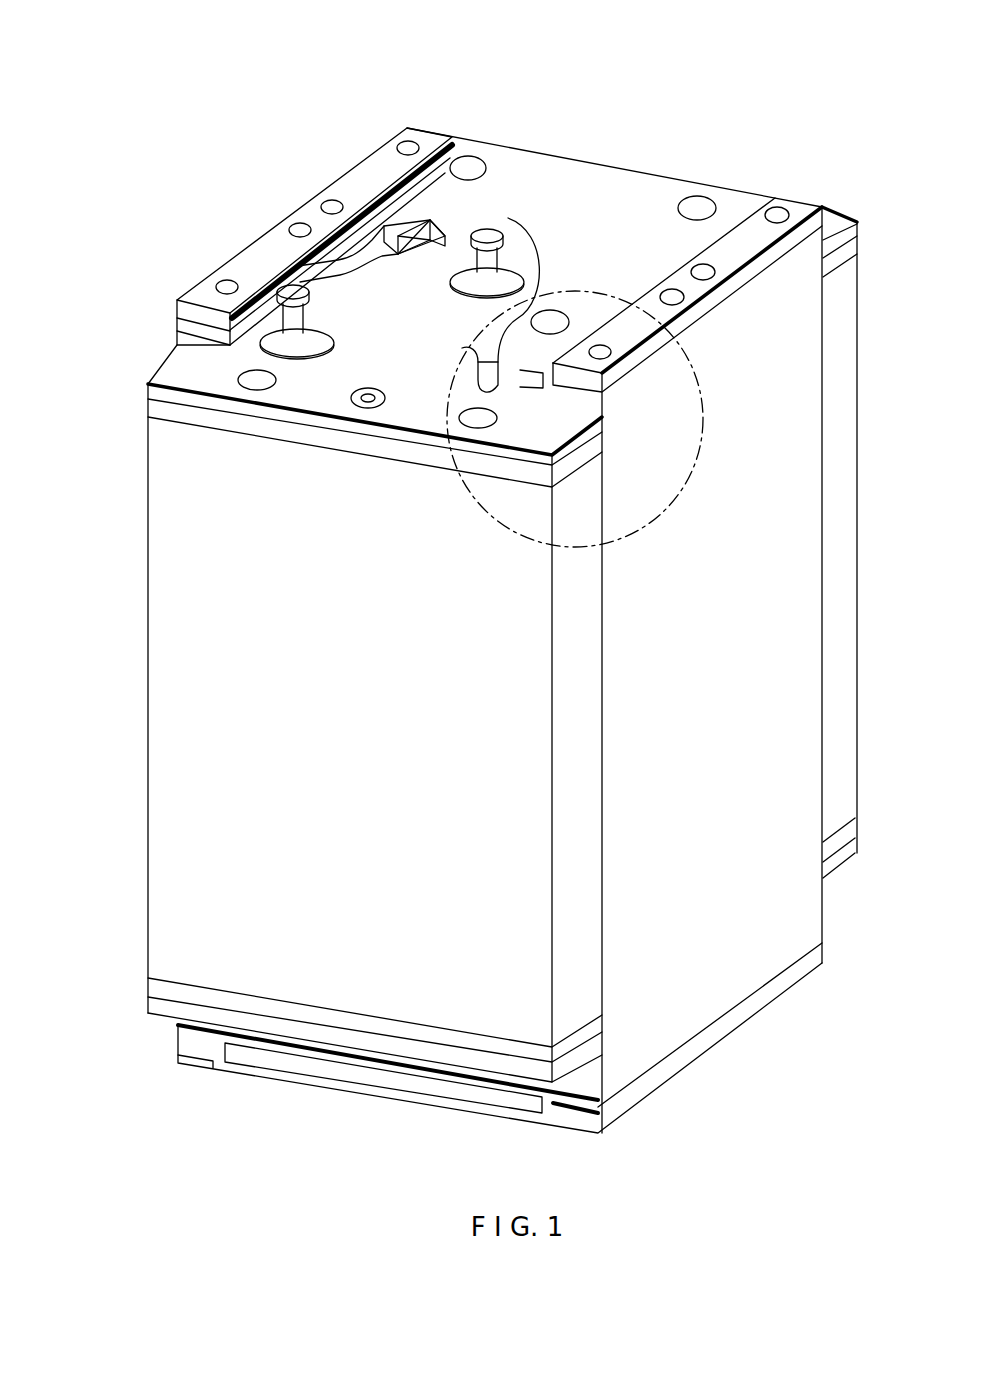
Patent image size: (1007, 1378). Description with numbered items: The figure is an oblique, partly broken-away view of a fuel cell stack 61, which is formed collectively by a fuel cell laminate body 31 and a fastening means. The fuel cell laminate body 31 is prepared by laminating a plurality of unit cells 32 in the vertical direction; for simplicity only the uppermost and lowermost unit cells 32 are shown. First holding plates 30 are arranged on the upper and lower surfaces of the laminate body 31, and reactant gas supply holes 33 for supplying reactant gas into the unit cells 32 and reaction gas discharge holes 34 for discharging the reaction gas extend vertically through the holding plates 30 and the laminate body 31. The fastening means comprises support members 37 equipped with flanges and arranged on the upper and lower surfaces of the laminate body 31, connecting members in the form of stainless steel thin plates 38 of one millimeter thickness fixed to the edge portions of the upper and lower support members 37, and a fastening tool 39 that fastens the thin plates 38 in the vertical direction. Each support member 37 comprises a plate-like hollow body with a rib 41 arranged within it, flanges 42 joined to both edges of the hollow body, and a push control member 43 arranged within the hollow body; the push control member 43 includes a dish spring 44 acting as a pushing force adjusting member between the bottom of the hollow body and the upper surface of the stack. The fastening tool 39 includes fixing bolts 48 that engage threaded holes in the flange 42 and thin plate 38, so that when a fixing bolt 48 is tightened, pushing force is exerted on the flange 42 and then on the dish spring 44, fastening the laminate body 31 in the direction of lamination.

The fuel cell stack 61 is at (372, 62).
The fuel cell laminate body 31 is at (133, 717).
The first holding plate 30 is at (160, 397).
The unit cell 32 is at (190, 418).
The reactant gas supply hole 33 is at (255, 380).
The reaction gas discharge hole 34 is at (376, 396).
The support member 37 is at (625, 137).
The connecting member (thin plate) 38 is at (605, 1060).
The fastening tool 39 is at (396, 126).
The rib 41 is at (416, 248).
The flange 42 is at (582, 397).
The push control member 43 is at (324, 302).
The dish spring 44 is at (330, 346).
The fixing bolt 48 is at (600, 347).